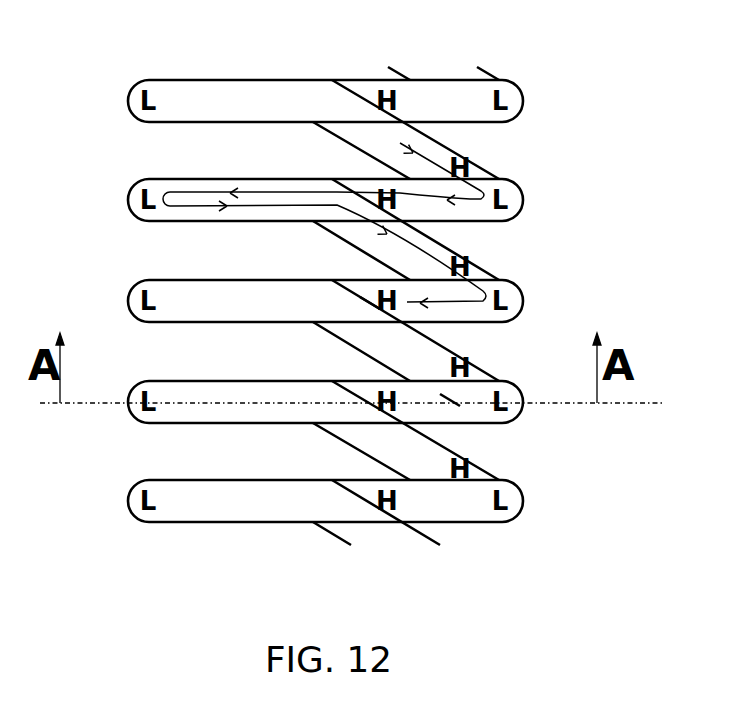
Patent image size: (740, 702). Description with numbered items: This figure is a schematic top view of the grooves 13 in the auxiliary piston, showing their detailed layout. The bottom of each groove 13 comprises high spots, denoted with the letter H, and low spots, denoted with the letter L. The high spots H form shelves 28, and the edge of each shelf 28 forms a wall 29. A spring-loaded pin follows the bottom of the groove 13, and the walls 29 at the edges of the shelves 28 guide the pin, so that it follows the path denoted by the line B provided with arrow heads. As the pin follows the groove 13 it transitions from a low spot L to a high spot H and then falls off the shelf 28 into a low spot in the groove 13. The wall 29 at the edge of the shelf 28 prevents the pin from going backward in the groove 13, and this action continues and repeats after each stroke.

The groove 13 is at (258, 108).
The shelf 28 is at (366, 93).
The wall 29 is at (363, 302).
The line B is at (477, 183).